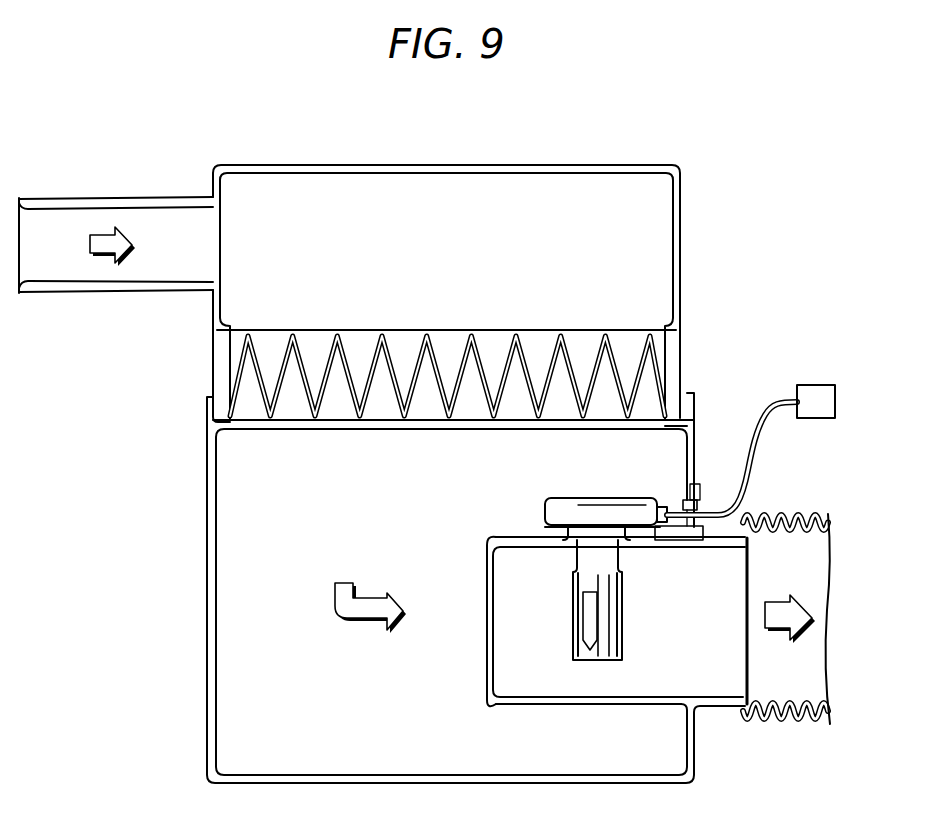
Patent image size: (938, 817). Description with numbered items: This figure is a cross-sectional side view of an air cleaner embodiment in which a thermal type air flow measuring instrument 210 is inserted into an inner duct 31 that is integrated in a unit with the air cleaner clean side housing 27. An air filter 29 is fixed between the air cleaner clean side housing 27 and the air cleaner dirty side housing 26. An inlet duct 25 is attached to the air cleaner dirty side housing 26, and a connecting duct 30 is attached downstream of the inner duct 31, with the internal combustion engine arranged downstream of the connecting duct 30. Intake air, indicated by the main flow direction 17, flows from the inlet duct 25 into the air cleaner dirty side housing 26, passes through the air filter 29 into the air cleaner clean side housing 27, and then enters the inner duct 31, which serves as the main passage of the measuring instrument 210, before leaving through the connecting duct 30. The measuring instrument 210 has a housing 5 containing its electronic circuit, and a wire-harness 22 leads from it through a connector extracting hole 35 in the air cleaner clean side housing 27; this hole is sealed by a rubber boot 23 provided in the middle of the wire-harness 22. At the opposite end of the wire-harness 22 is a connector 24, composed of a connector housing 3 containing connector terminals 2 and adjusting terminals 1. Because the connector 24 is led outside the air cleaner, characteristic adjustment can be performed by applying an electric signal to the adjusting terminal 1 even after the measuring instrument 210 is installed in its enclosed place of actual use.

The adjusting terminal 1 is at (586, 584).
The connector terminal 2 is at (620, 587).
The connector housing 3 is at (610, 634).
The housing 5 is at (492, 578).
The main flow direction 17 is at (104, 232).
The wire-harness 22 is at (766, 400).
The rubber boot 23 is at (680, 500).
The connector 24 is at (831, 388).
The inlet duct 25 is at (70, 198).
The air cleaner dirty side housing 26 is at (514, 166).
The air cleaner clean side housing 27 is at (207, 540).
The air filter 29 is at (352, 332).
The connecting duct 30 is at (792, 515).
The inner duct 31 is at (548, 706).
The connector extracting hole 35 is at (702, 484).
The thermal type air flow measuring instrument 210 is at (566, 500).